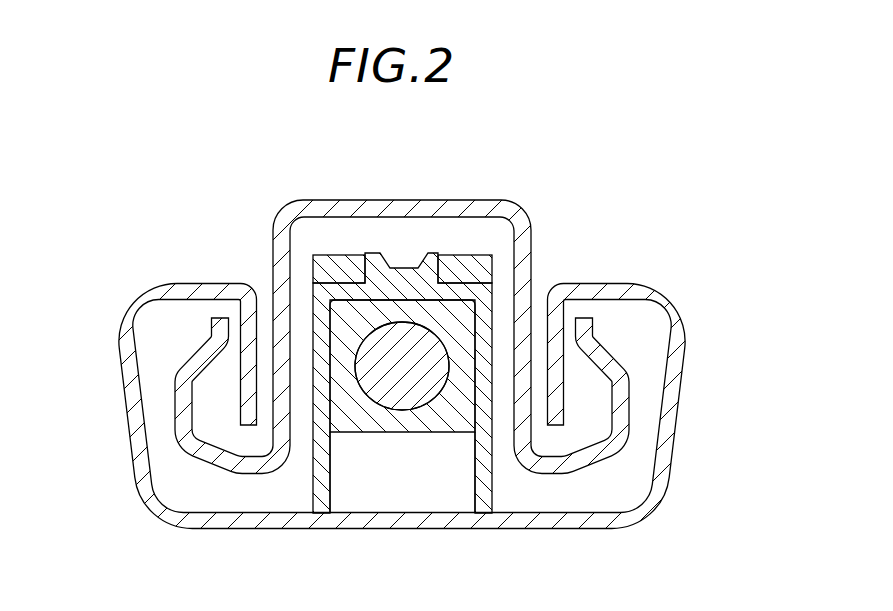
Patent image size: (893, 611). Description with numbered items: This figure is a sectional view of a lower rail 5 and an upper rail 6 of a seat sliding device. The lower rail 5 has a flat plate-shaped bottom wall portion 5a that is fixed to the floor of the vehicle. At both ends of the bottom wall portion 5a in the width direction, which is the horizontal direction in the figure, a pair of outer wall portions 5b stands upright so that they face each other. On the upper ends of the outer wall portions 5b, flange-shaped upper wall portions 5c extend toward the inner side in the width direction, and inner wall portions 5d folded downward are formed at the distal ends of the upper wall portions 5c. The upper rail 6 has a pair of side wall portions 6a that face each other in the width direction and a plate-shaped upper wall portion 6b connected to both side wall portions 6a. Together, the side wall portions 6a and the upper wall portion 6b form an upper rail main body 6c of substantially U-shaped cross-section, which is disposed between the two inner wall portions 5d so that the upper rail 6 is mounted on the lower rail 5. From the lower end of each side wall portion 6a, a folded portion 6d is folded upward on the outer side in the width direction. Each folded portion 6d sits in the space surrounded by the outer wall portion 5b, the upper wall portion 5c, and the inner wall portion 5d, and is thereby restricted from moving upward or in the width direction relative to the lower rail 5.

The lower rail 5 is at (400, 408).
The bottom wall portion 5a is at (396, 530).
The outer wall portions 5b is at (133, 418).
The upper wall portions 5c is at (196, 292).
The inner wall portions 5d is at (251, 307).
The upper rail 6 is at (400, 315).
The side wall portions 6a is at (273, 232).
The upper wall portion 6b is at (400, 205).
The upper rail main body 6c is at (483, 205).
The folded portions 6d is at (176, 392).